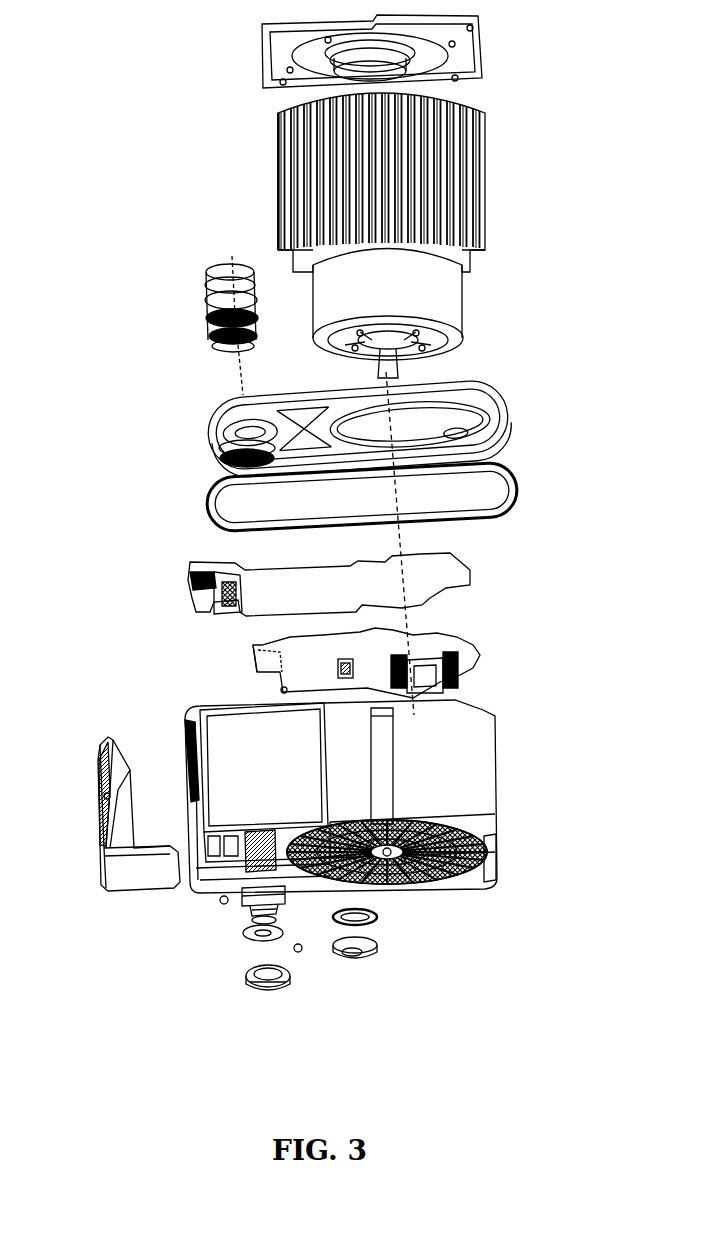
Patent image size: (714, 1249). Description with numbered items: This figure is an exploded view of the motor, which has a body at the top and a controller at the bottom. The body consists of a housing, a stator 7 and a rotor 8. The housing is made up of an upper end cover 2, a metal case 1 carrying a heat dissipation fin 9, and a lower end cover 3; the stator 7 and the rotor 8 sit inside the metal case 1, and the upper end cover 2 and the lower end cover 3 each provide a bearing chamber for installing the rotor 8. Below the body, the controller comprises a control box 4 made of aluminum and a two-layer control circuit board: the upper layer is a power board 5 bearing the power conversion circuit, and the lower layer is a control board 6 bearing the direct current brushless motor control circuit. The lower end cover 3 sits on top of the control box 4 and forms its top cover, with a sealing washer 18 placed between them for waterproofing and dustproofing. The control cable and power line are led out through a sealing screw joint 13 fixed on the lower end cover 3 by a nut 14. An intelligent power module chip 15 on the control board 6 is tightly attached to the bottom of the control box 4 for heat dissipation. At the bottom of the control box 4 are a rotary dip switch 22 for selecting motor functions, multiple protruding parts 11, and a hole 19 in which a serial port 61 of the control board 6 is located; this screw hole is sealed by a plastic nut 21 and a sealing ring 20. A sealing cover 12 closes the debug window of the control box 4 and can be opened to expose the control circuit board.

The metal case 1 is at (485, 162).
The upper end cover 2 is at (467, 55).
The lower end cover 3 is at (512, 400).
The control box 4 is at (460, 730).
The power board 5 is at (420, 562).
The control board 6 is at (445, 632).
The stator 7 is at (436, 290).
The rotor 8 is at (450, 338).
The heat dissipation fin 9 is at (278, 176).
The protruding parts 11 is at (486, 862).
The sealing cover 12 is at (95, 802).
The sealing screw joint 13 is at (207, 325).
The nut 14 is at (222, 454).
The intelligent power module chip 15 is at (458, 660).
The sealing washer 18 is at (498, 468).
The hole 19 is at (395, 882).
The sealing ring 20 is at (378, 918).
The plastic nut 21 is at (377, 952).
The rotary dip switch 22 is at (250, 970).
The serial port 61 is at (338, 667).